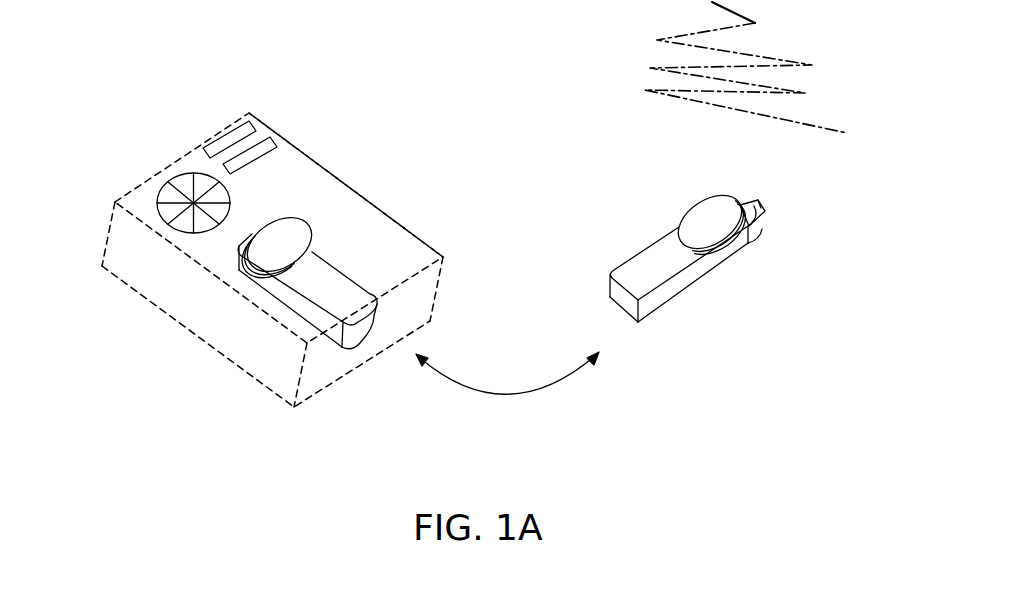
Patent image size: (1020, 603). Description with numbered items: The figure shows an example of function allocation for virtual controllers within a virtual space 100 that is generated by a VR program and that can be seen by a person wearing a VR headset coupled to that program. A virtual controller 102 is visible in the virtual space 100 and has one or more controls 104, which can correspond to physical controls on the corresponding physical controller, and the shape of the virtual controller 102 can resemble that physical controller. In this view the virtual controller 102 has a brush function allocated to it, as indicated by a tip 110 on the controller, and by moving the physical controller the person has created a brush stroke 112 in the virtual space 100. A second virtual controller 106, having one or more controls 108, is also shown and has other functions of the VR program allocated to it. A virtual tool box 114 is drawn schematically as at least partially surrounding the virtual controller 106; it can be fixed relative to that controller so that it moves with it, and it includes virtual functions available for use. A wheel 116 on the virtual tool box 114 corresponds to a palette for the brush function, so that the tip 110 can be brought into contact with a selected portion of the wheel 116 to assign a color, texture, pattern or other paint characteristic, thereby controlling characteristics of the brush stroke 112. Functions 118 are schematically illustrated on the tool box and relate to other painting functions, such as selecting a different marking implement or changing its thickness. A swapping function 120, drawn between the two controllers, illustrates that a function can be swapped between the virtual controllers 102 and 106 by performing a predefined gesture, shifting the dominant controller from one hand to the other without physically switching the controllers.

The virtual space 100 is at (795, 421).
The virtual controller 102 is at (643, 248).
The controls 104 is at (705, 198).
The virtual controller 106 is at (417, 238).
The controls 108 is at (274, 219).
The tip 110 is at (757, 225).
The brush stroke 112 is at (832, 126).
The virtual tool box 114 is at (356, 191).
The wheel 116 is at (160, 190).
The functions 118 is at (237, 130).
The swapping function 120 is at (515, 396).